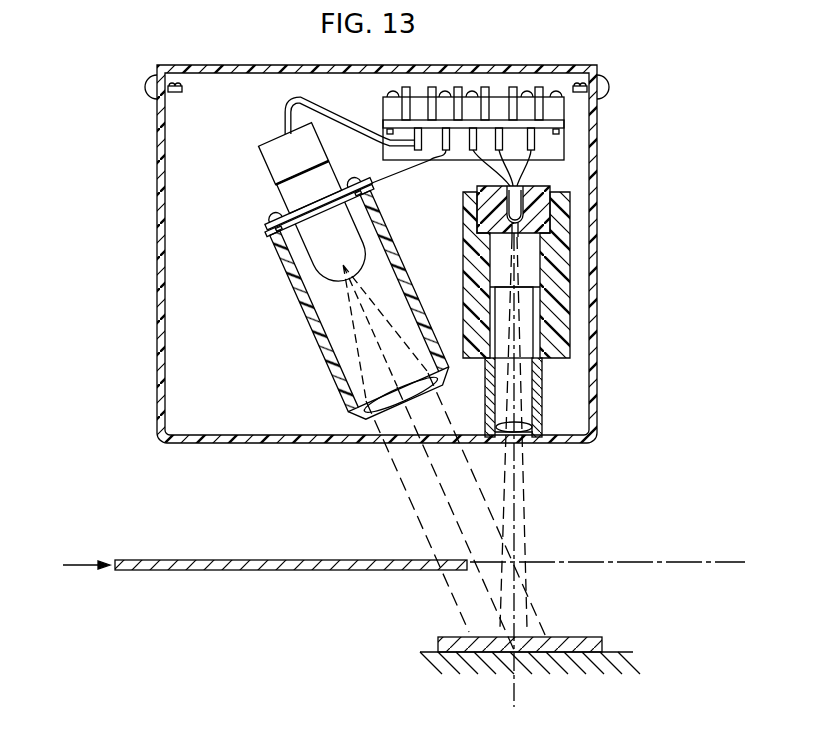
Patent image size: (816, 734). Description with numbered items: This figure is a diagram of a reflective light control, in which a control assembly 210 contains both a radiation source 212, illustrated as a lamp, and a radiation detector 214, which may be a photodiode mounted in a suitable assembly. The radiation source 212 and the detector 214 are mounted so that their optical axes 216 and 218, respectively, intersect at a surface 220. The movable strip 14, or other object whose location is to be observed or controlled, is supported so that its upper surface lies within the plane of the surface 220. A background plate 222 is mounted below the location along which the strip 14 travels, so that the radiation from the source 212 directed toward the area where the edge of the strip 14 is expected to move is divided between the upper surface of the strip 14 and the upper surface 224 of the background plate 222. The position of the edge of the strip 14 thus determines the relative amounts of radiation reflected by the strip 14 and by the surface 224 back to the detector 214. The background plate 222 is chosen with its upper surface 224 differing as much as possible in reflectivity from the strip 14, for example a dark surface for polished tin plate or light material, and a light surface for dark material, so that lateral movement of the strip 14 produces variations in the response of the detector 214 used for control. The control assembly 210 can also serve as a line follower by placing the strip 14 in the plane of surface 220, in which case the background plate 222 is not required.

The movable strip 14 is at (176, 561).
The control assembly 210 is at (578, 118).
The radiation source 212 is at (333, 262).
The radiation detector 214 is at (518, 210).
The optical axis of radiation source 216 is at (462, 528).
The optical axis of radiation detector 218 is at (515, 528).
The surface 220 is at (647, 562).
The background plate 222 is at (585, 652).
The upper surface of background plate 224 is at (583, 637).